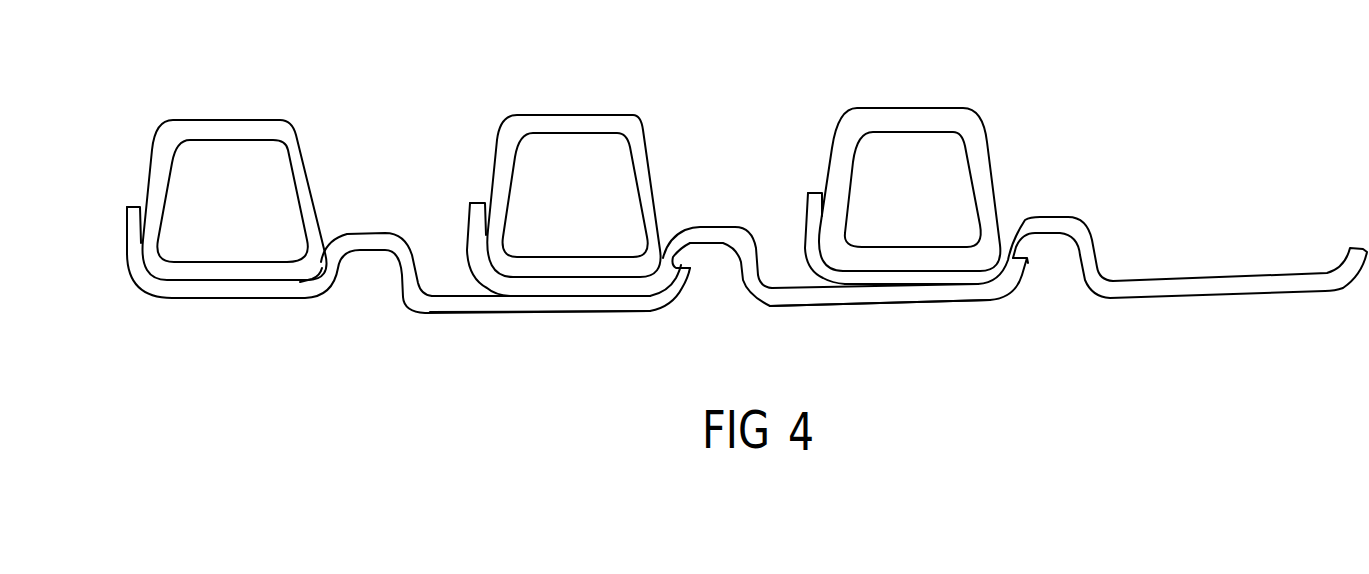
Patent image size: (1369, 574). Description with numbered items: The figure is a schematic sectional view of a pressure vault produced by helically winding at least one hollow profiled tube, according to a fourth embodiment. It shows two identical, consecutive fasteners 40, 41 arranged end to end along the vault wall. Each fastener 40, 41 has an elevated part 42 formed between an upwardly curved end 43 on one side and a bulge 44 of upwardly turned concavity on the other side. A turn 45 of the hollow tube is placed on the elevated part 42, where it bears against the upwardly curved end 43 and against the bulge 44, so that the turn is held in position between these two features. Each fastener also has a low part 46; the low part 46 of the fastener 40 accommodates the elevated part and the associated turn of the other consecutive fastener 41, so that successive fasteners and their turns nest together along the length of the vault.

The fastener 40 is at (714, 290).
The fastener 41 is at (875, 310).
The elevated part 42 is at (228, 288).
The upwardly curved end 43 is at (132, 232).
The bulge 44 is at (365, 236).
The turn 45 is at (226, 105).
The low part 46 is at (600, 300).